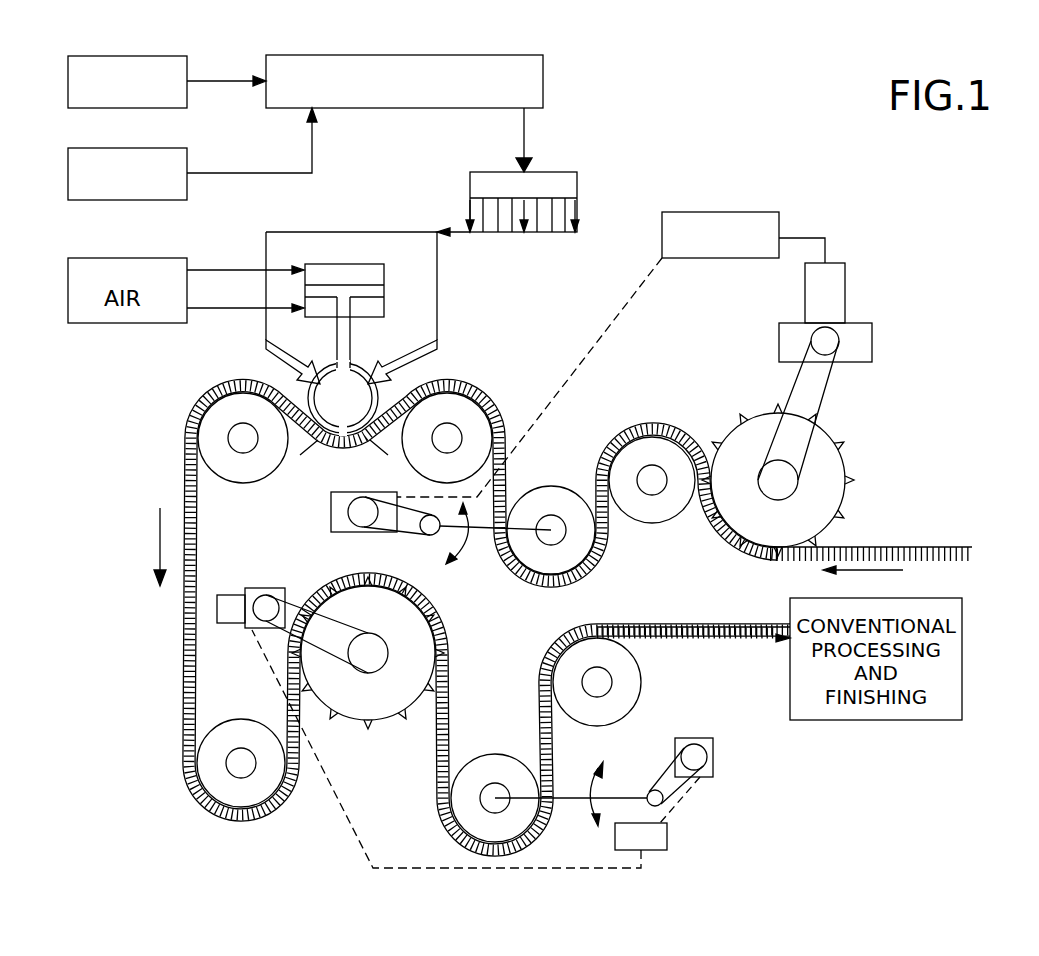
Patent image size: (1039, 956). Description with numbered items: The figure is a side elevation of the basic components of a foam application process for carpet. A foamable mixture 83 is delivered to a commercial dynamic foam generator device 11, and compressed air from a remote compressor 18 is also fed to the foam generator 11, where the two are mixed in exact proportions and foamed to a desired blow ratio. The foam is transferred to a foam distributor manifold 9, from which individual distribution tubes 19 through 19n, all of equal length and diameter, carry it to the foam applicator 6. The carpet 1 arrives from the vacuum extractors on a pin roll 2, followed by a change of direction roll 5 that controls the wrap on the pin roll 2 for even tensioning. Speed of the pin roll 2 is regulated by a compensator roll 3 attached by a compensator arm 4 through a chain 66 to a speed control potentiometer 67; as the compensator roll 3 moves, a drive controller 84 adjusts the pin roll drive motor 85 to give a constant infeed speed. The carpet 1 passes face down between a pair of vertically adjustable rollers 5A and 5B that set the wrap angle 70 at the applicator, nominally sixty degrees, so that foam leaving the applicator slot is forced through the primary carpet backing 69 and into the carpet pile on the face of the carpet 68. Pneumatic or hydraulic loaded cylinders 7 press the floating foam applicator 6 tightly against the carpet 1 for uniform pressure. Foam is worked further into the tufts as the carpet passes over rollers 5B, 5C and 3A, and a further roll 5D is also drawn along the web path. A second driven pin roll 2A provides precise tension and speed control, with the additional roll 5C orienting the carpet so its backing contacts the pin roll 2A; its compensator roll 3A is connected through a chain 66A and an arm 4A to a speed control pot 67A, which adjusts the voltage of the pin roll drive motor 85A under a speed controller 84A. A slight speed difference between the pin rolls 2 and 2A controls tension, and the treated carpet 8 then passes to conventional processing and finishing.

The carpet 1 is at (858, 547).
The pin roll 2 is at (828, 468).
The second driven pin roll 2A is at (352, 705).
The compensator roll 3 is at (543, 500).
The compensator roll 3A is at (510, 766).
The compensator arm 4 is at (468, 560).
The arm 4A is at (568, 802).
The change of direction roll 5 is at (648, 515).
The vertically adjustable roller 5A is at (460, 412).
The vertically adjustable roller 5B is at (247, 412).
The additional roll 5C is at (255, 733).
The idler roller 5D is at (625, 687).
The foam applicator 6 is at (382, 398).
The pneumatic or hydraulic loaded cylinders 7 is at (345, 264).
The treated carpet 8 is at (541, 700).
The foam distributor manifold 9 is at (548, 178).
The dynamic foam generator device 11 is at (546, 83).
The remote compressor 18 is at (82, 148).
The distribution tube 19 is at (468, 212).
The distribution tube 19n is at (578, 220).
The chain 66 is at (415, 532).
The chain 66A is at (666, 770).
The speed control potentiometer 67 is at (331, 514).
The speed control pot 67A is at (713, 740).
The face of the carpet 68 is at (200, 524).
The primary carpet backing 69 is at (184, 486).
The wrap angle 70 is at (386, 456).
The foamable mixture 83 is at (82, 56).
The drive controller 84 is at (755, 212).
The speed controller 84A is at (668, 838).
The pin roll drive motor 85 is at (838, 296).
The pin roll drive motor 85A is at (232, 612).